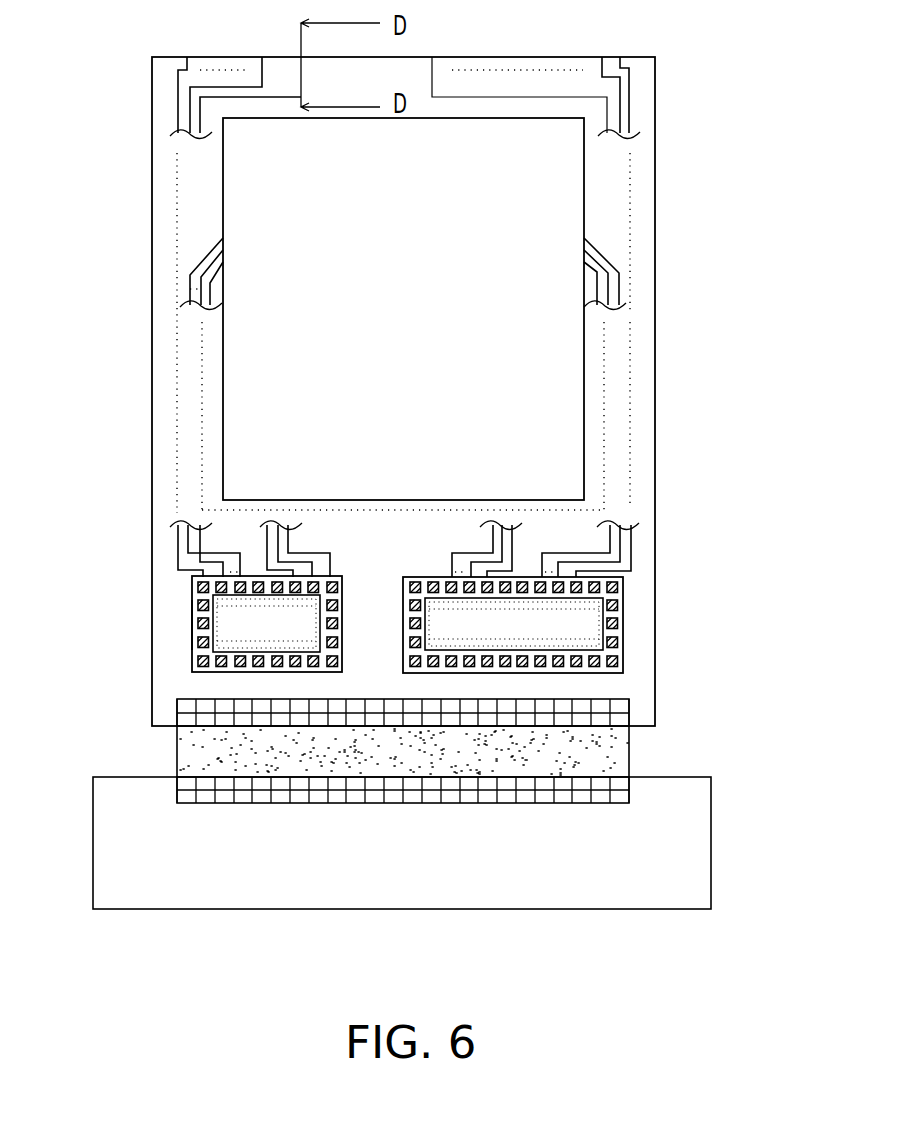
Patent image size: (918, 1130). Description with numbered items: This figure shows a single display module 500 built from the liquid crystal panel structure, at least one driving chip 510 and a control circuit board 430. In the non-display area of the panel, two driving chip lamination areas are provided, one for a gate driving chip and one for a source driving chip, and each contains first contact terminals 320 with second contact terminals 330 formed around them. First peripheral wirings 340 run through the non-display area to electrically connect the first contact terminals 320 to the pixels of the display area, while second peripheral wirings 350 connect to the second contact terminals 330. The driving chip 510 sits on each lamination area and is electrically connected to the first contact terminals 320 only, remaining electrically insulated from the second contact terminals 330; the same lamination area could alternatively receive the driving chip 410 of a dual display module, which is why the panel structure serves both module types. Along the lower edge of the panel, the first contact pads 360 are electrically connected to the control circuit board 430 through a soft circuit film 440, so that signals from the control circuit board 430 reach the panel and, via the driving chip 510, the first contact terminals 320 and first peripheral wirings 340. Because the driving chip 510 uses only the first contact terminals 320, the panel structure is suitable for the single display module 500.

The first contact terminals 320 is at (220, 604).
The second contact terminals 330 is at (192, 583).
The first peripheral wirings 340 is at (290, 541).
The second peripheral wirings 350 is at (178, 545).
The first contact pads 360 is at (618, 705).
The driving chip 410 is at (193, 632).
The control circuit board 430 is at (687, 862).
The soft circuit film 440 is at (620, 753).
The single display module 500 is at (766, 982).
The driving chip 510 is at (193, 650).